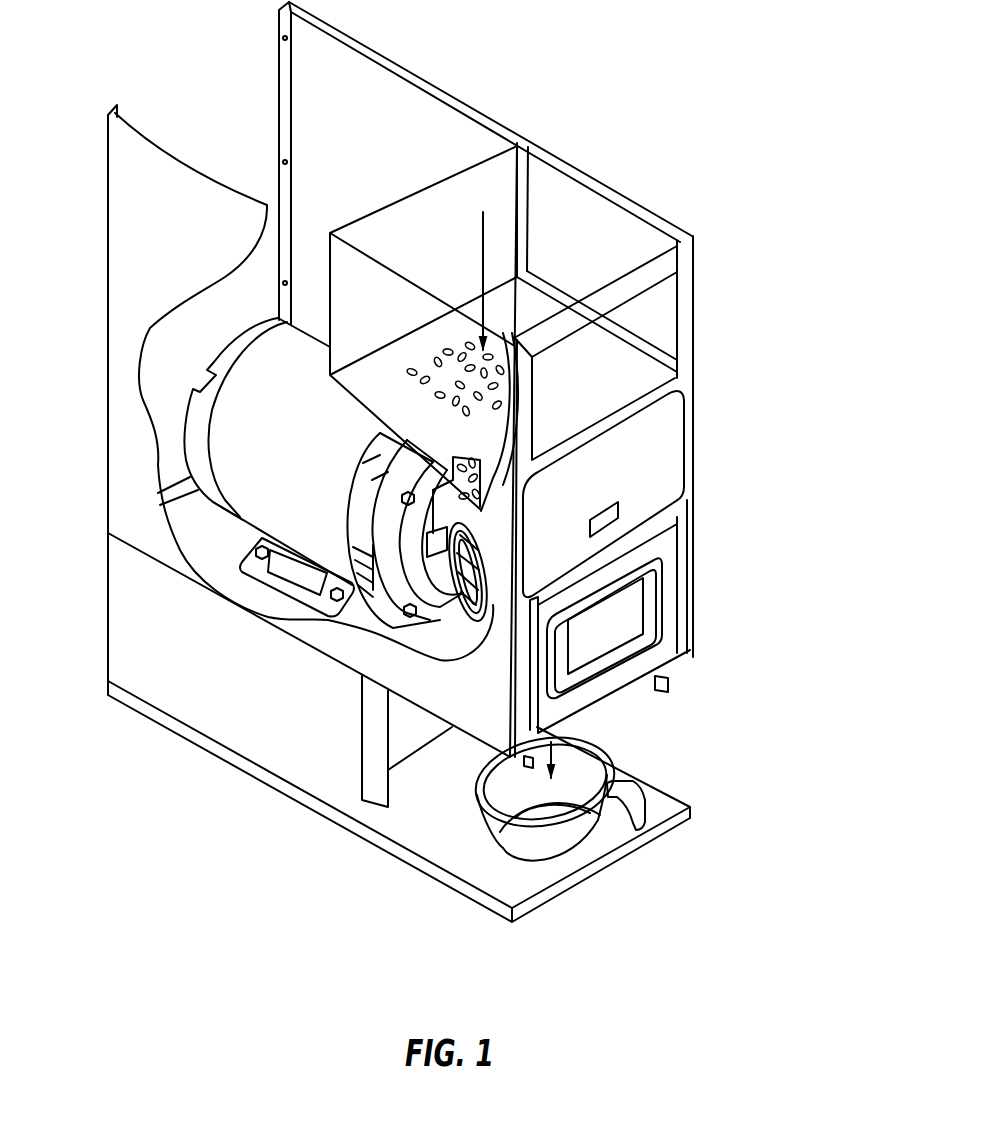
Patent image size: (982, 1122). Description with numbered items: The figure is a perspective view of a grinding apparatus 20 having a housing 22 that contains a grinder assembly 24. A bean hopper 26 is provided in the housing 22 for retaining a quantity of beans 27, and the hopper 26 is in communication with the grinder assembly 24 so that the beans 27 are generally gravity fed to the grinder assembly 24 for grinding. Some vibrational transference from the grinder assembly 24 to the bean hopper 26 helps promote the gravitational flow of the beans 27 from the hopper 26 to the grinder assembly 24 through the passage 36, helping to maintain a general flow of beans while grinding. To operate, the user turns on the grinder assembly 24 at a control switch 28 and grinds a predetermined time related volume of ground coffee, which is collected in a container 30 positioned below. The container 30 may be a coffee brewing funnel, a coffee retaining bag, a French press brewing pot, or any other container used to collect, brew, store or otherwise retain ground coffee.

The grinding apparatus 20 is at (754, 388).
The housing 22 is at (138, 513).
The grinder assembly 24 is at (242, 460).
The bean hopper 26 is at (582, 233).
The beans 27 is at (330, 315).
The control switch 28 is at (605, 517).
The container 30 is at (575, 830).
The passage 36 is at (400, 435).